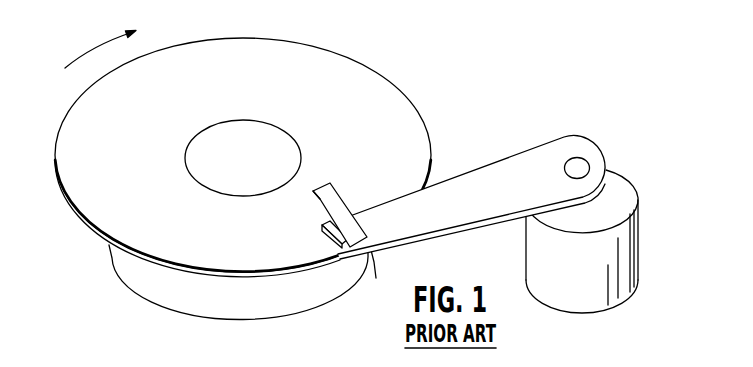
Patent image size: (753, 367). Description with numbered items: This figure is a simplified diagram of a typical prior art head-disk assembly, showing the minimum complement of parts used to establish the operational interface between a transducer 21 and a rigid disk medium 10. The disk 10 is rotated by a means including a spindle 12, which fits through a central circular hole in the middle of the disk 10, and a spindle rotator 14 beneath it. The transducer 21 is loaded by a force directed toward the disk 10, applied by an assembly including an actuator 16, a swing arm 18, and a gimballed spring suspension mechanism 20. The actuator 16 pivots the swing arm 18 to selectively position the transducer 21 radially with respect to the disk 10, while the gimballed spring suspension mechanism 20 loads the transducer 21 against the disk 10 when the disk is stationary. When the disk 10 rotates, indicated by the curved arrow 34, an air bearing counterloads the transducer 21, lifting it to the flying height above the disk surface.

The rigid disk medium 10 is at (328, 58).
The spindle 12 is at (248, 128).
The spindle rotator 14 is at (178, 300).
The actuator 16 is at (638, 257).
The swing arm 18 is at (475, 171).
The gimballed spring suspension mechanism 20 is at (333, 197).
The transducer 21 is at (311, 193).
The direction of rotation arrow 34 is at (90, 50).